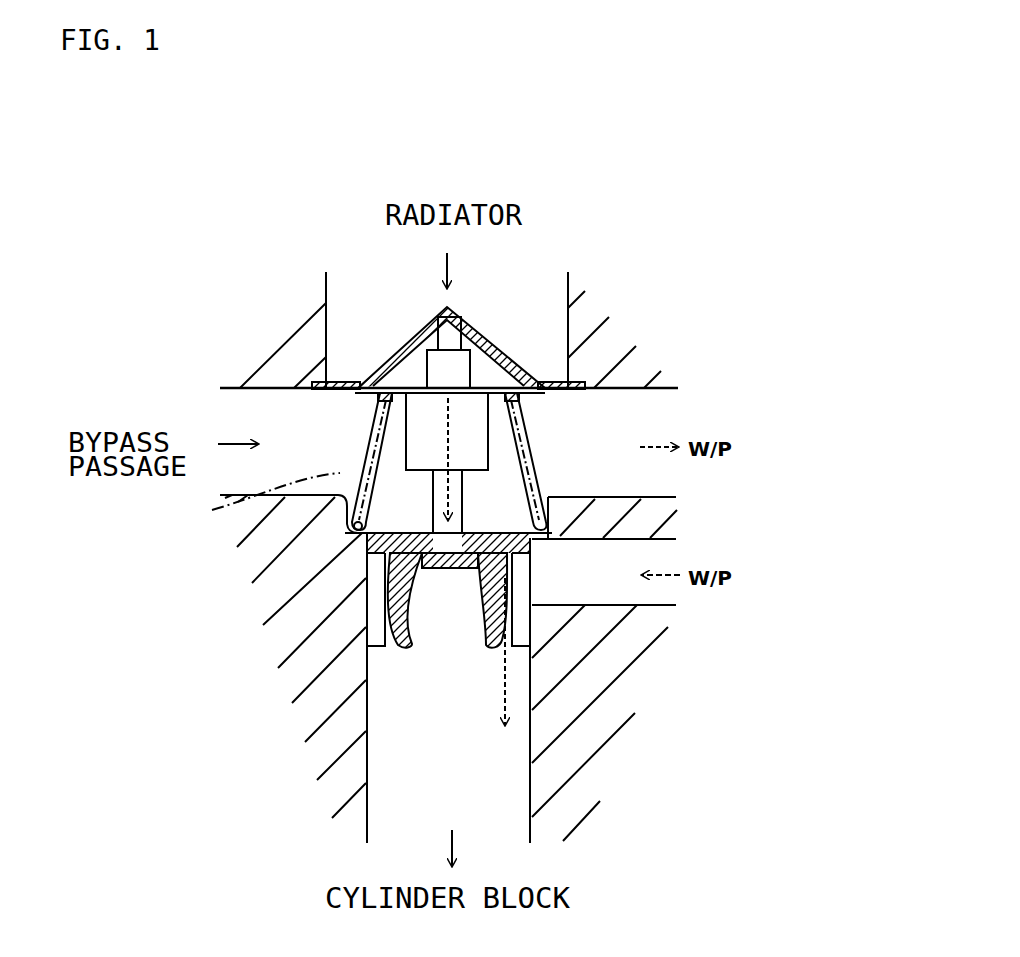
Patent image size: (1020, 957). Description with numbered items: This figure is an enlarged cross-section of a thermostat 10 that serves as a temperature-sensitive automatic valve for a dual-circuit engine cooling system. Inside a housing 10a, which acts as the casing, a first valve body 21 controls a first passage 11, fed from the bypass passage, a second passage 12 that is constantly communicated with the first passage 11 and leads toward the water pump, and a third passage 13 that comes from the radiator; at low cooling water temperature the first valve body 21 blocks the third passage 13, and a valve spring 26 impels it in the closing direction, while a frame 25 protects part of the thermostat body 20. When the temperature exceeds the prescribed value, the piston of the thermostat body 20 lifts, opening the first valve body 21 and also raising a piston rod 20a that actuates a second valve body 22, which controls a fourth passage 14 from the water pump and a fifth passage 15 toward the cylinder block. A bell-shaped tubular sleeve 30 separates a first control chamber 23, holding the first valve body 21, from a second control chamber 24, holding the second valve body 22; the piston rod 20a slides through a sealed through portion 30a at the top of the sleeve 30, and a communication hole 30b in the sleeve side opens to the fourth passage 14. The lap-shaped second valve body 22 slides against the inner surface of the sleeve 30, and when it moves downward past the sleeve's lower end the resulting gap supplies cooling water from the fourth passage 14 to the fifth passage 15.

The thermostat 10 is at (742, 326).
The housing 10a is at (358, 545).
The first passage 11 is at (232, 388).
The second passage 12 is at (632, 390).
The third passage 13 is at (568, 285).
The fourth passage 14 is at (636, 540).
The fifth passage 15 is at (531, 800).
The thermostat body 20 is at (473, 427).
The piston rod 20a is at (348, 535).
The first valve body 21 is at (505, 366).
The second valve body 22 is at (396, 650).
The first control chamber 23 is at (517, 518).
The second control chamber 24 is at (470, 680).
The frame 25 is at (400, 346).
The valve spring 26 is at (212, 510).
The tubular sleeve 30 is at (350, 635).
The through portion 30a is at (541, 502).
The communication hole 30b is at (533, 585).